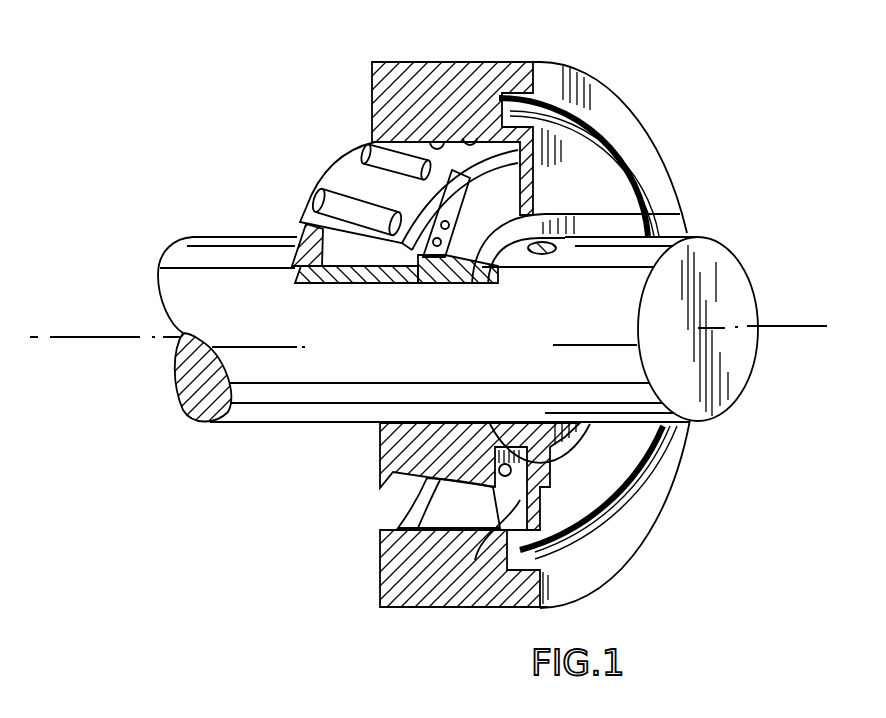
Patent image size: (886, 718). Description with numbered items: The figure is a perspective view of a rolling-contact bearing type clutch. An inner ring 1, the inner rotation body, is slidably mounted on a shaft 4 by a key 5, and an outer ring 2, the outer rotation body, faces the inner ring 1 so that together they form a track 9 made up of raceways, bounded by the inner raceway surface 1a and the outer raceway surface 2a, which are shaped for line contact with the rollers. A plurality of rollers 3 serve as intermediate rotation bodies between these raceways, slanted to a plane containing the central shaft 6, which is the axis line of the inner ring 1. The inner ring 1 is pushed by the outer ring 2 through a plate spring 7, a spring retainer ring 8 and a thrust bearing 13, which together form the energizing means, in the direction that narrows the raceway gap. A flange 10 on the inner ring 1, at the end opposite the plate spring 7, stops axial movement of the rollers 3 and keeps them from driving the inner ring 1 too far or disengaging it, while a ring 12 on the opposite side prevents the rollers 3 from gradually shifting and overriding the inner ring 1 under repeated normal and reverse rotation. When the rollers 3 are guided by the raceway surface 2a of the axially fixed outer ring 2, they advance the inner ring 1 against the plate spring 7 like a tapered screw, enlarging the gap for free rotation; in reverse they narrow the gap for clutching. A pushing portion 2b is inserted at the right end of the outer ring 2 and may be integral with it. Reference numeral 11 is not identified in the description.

The inner ring 1 is at (340, 272).
The inner raceway surface 1a is at (383, 265).
The outer ring 2 is at (487, 72).
The raceway surface 2a is at (420, 138).
The pushing portion 2b is at (613, 188).
The rollers 3 is at (313, 193).
The shaft 4 is at (662, 237).
The key 5 is at (538, 254).
The central shaft 6 is at (797, 328).
The plate spring 7 is at (557, 170).
The spring retainer ring 8 is at (462, 262).
The track 9 is at (422, 507).
The flange 10 is at (310, 232).
The rollers 11 is at (350, 177).
The ring 12 is at (475, 560).
The thrust bearing 13 is at (520, 457).